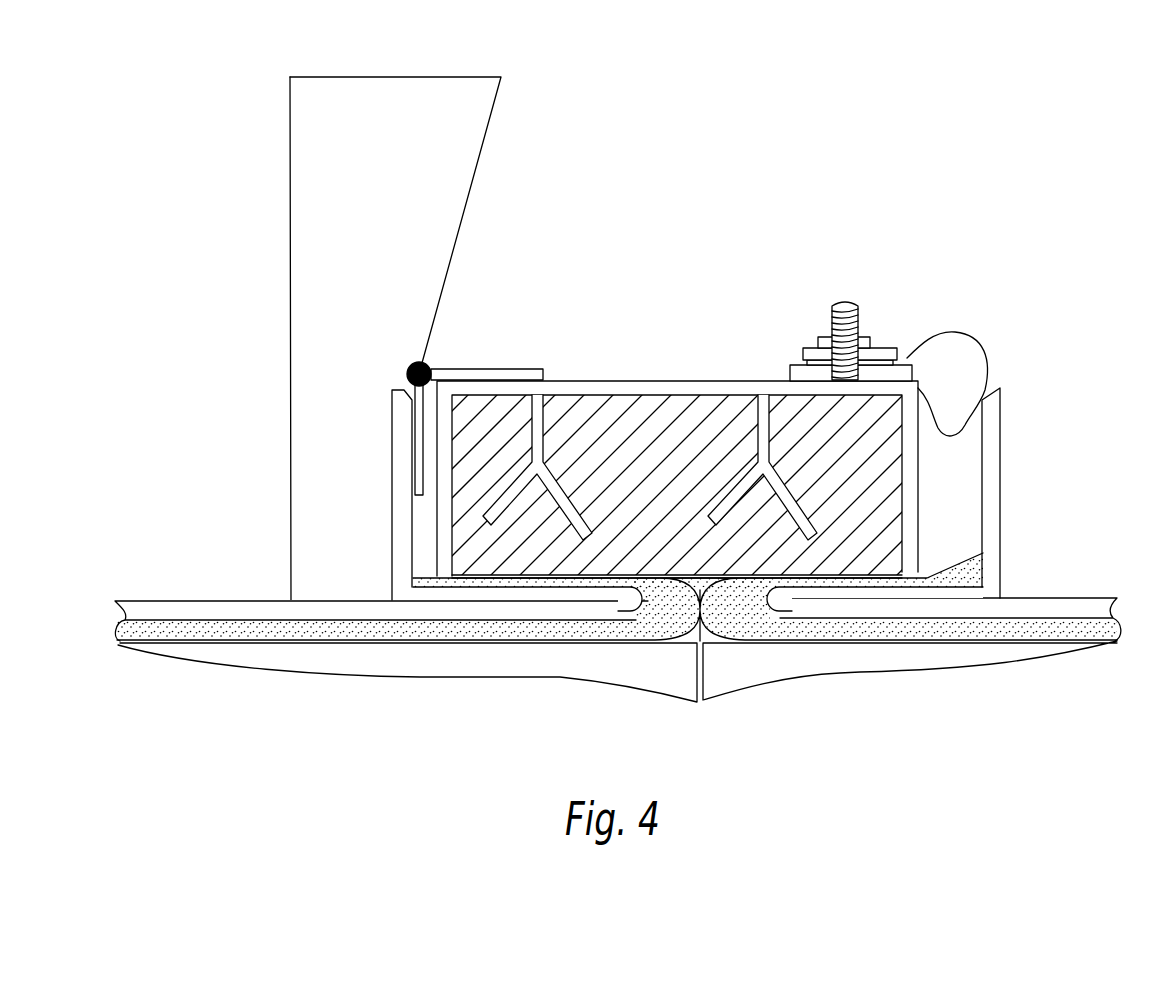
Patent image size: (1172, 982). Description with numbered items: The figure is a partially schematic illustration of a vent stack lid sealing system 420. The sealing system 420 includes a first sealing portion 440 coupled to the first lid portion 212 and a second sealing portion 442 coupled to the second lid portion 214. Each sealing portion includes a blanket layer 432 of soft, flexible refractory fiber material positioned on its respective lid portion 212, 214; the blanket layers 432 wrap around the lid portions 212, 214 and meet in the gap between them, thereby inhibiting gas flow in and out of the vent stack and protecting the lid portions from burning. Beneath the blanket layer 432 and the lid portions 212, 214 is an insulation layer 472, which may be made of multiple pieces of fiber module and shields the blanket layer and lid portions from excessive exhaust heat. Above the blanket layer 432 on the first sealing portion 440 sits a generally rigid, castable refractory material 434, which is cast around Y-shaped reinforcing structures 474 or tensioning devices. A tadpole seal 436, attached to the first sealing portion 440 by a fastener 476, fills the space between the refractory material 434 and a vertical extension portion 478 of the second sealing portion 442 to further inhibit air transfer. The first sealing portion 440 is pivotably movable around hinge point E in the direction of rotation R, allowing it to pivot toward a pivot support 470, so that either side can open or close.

The sealing system 420 is at (682, 380).
The first sealing portion 440 is at (339, 338).
The pivot support 470 is at (291, 493).
The castable refractory material 434 is at (462, 463).
The reinforcing structures 474 is at (537, 400).
The fastener 476 is at (858, 312).
The tadpole seal 436 is at (983, 383).
The vertical extension portion 478 is at (992, 432).
The second sealing portion 442 is at (620, 601).
The first lid portion 212 is at (318, 606).
The second lid portion 214 is at (1057, 607).
The blanket layer 432 is at (390, 628).
The insulation layer 472 is at (617, 668).
The hinge point E is at (408, 365).
The direction of rotation R is at (437, 335).